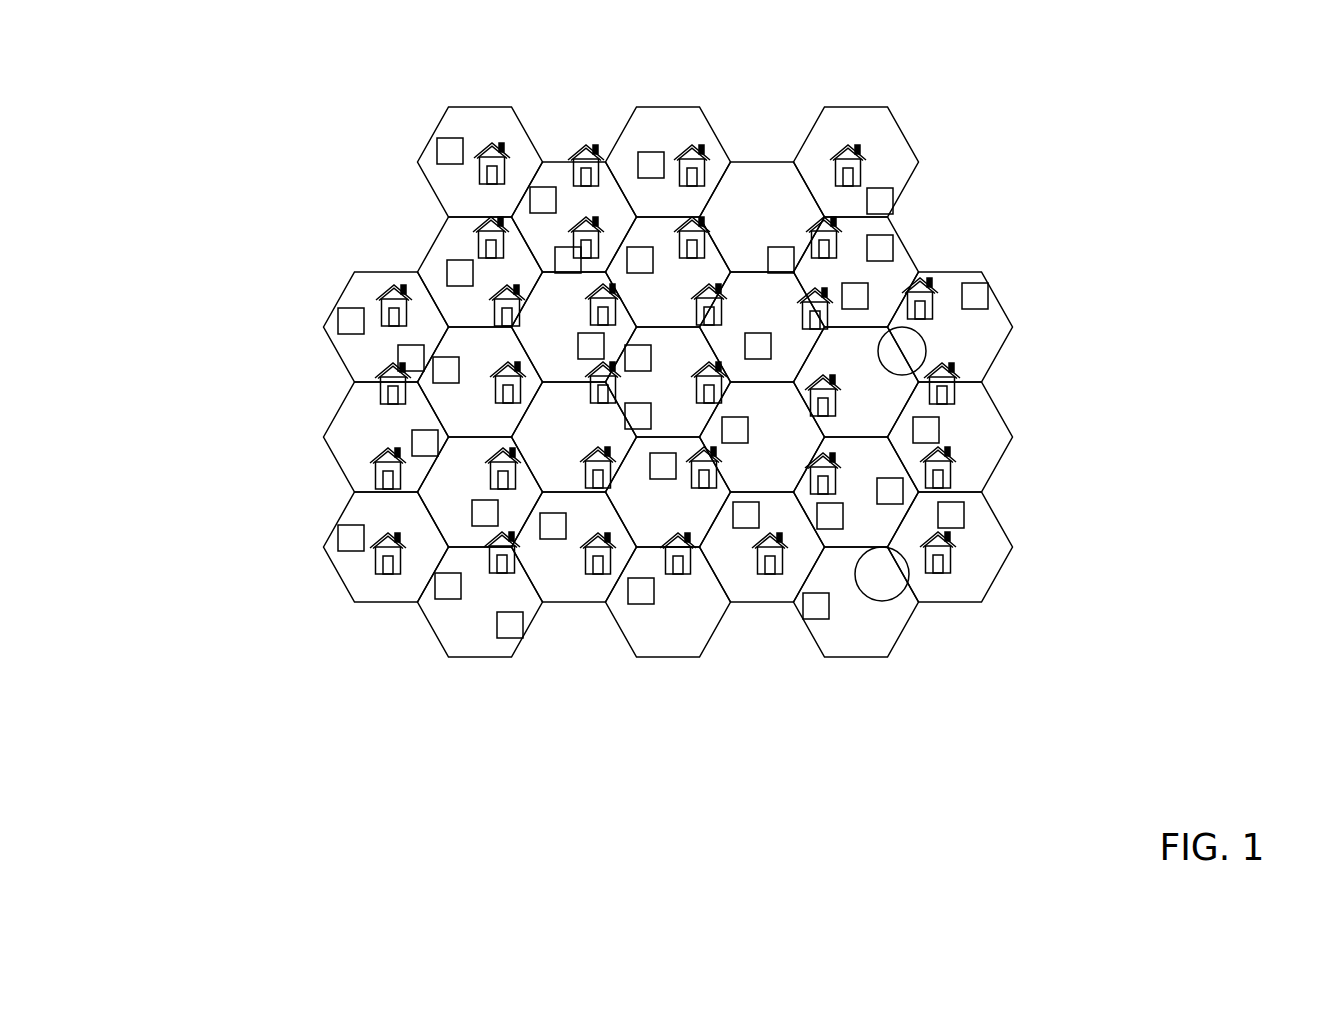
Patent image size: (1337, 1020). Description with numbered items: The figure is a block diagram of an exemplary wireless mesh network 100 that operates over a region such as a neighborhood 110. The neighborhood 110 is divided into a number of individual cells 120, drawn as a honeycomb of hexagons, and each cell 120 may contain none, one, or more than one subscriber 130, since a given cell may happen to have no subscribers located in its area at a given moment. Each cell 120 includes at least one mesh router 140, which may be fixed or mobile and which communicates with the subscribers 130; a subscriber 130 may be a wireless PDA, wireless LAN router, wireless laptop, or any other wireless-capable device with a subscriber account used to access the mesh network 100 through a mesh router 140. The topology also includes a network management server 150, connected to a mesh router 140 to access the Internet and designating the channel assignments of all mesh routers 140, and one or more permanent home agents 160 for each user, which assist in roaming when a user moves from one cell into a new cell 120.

The mesh network 100 is at (711, 386).
The neighborhood 110 is at (668, 386).
The cells 120 is at (823, 107).
The subscriber 130 is at (487, 547).
The mesh router 140 is at (338, 305).
The network management server 150 is at (927, 352).
The permanent home agent 160 is at (908, 591).